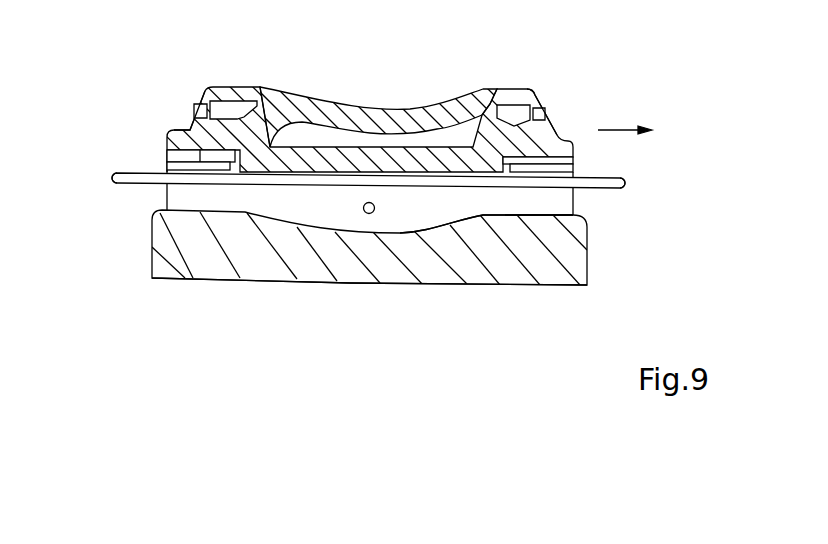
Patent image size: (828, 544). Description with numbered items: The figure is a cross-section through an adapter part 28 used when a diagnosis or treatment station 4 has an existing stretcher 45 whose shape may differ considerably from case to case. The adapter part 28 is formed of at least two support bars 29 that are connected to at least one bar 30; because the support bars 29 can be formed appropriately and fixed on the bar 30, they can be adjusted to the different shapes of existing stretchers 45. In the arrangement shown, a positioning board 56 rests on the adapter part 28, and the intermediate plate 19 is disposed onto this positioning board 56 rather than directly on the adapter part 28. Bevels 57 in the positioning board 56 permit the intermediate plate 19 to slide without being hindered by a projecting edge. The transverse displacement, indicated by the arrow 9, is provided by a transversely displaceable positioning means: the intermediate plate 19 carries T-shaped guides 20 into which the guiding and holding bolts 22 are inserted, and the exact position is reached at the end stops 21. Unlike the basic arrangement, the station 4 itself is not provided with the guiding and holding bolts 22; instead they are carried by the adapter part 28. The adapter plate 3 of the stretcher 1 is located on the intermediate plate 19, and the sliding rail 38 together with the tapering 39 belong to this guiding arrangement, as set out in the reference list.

The stretcher 1 is at (430, 108).
The adapter plate 3 is at (573, 112).
The diagnosis or treatment station 4 is at (555, 268).
The arrow: displacement in the transverse direction 9 is at (617, 130).
The intermediate plate 19 is at (533, 138).
The guides (T-shaped groove) 20 is at (166, 160).
The end stops 21 is at (298, 120).
The guiding and holding bolts 22 is at (190, 126).
The adapter part 28 is at (557, 200).
The support bars 29 is at (522, 198).
The bar 30 is at (368, 213).
The sliding rail 38 is at (230, 110).
The tapering 39 is at (203, 114).
The existing stretcher of a diagnosis or treatment station 45 is at (238, 257).
The positioning board 56 is at (138, 185).
The bevel 57 is at (112, 173).